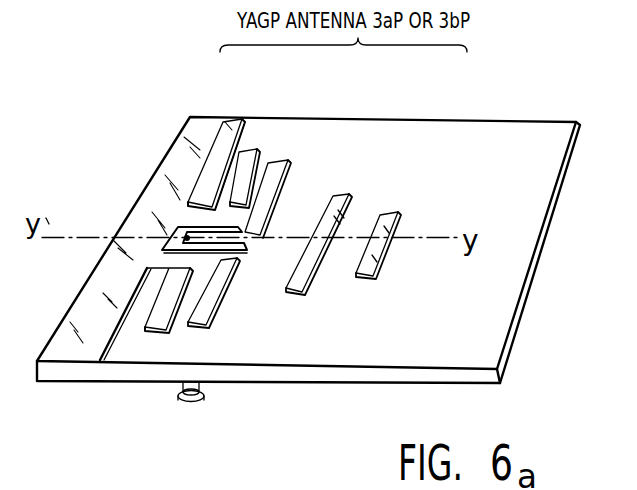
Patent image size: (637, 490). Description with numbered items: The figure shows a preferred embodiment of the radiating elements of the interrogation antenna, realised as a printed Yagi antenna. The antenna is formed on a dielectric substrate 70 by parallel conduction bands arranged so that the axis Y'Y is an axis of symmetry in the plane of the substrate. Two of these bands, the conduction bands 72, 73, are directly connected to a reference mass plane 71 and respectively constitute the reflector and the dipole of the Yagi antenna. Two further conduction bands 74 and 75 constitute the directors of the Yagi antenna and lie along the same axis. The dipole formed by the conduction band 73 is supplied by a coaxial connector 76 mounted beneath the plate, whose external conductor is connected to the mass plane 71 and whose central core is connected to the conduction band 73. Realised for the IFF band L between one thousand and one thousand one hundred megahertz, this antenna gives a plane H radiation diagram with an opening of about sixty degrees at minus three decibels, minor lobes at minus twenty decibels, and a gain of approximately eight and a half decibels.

The dielectric substrate 70 is at (475, 140).
The reference mass plane 71 is at (197, 127).
The conduction band 72 is at (250, 157).
The conduction band 73 is at (281, 157).
The conduction band 74 is at (343, 196).
The conduction band 75 is at (362, 272).
The coaxial connector 76 is at (190, 403).